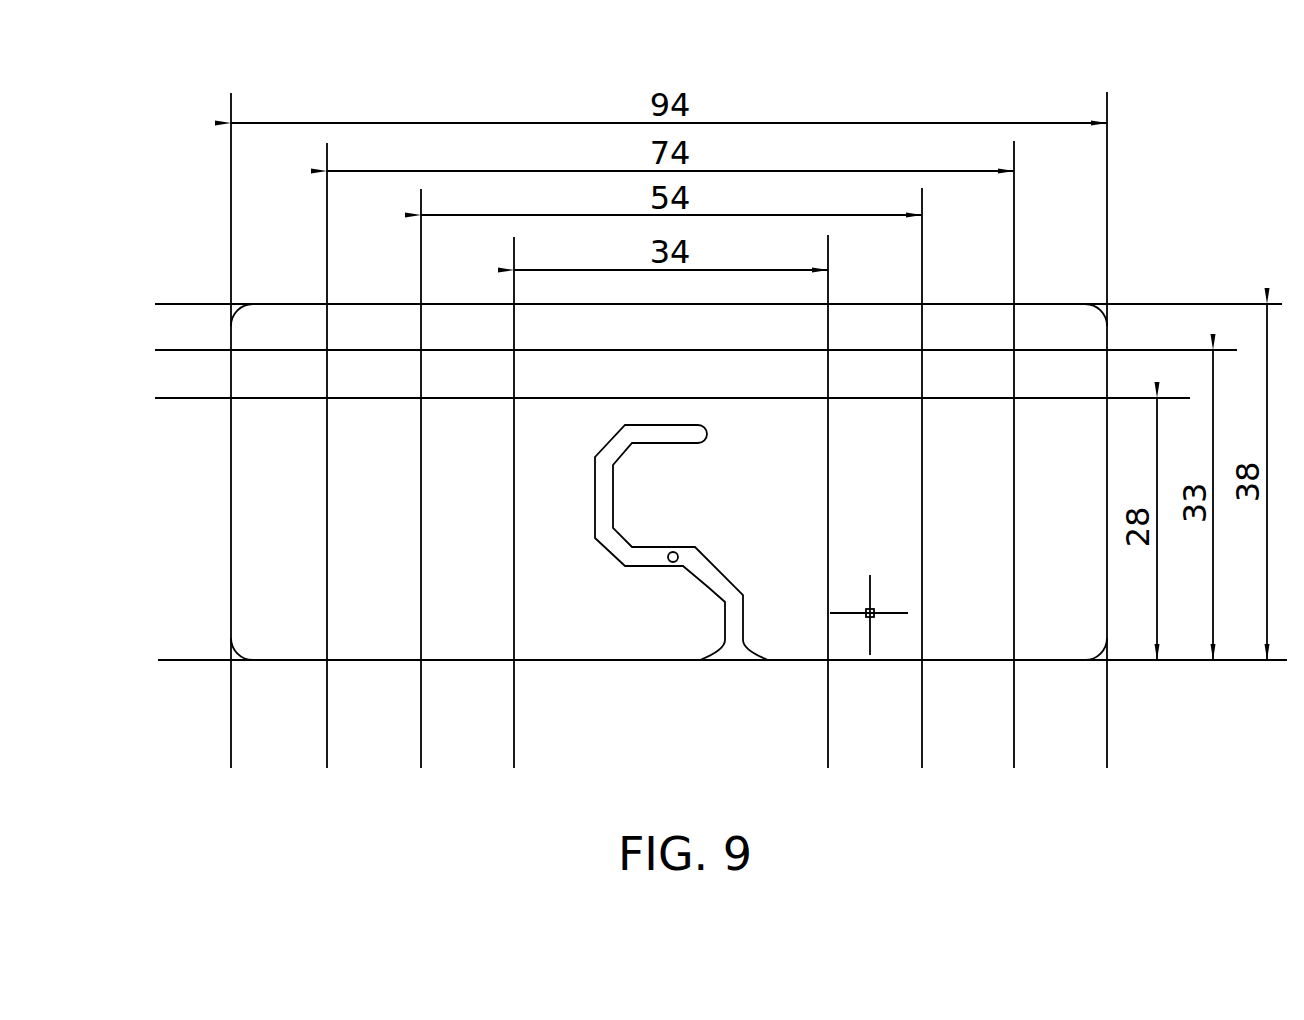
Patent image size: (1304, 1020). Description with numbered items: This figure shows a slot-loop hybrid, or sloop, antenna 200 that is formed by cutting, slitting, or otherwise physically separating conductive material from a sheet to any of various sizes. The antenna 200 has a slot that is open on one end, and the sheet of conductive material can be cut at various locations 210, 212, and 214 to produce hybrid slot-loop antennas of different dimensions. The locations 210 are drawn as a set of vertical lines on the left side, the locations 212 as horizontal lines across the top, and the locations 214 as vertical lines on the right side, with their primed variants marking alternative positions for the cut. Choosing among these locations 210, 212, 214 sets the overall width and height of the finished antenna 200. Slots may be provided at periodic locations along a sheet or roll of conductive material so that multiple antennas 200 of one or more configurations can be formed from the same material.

The slot-loop hybrid antenna 200 is at (1140, 250).
The cutting location 210 is at (231, 501).
The cutting location 212 is at (690, 303).
The cutting location 214 is at (832, 478).